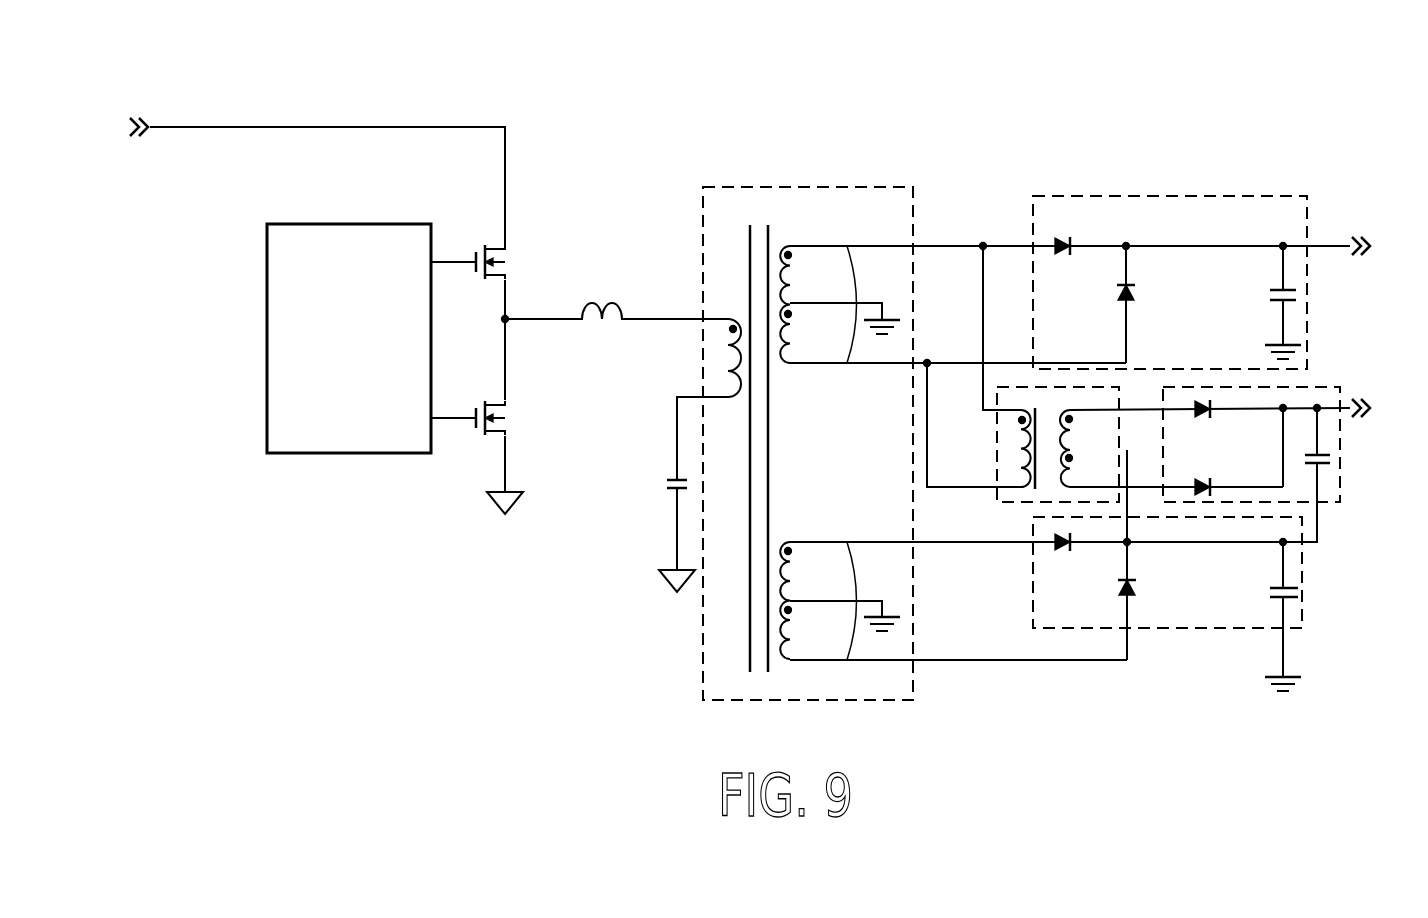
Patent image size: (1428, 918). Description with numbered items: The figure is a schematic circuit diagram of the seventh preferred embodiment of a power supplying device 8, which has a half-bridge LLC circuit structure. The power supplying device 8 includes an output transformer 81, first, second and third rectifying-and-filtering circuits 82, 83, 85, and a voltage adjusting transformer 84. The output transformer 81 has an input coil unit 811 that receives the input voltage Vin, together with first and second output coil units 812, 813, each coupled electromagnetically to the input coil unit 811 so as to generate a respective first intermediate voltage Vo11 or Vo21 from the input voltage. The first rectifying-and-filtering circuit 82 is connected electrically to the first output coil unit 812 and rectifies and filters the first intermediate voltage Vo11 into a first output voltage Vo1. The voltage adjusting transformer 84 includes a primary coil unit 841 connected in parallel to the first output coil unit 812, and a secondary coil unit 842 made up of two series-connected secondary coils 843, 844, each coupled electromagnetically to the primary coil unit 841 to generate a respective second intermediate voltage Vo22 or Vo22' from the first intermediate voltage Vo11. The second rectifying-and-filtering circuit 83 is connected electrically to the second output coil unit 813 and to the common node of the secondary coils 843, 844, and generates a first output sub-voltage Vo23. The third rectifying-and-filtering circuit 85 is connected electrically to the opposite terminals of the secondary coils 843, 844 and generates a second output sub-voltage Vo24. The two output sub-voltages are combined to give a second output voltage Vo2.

The power supplying device 8 is at (1214, 124).
The output transformer 81 is at (862, 186).
The input coil unit 811 is at (701, 367).
The first output coil unit 812 is at (801, 277).
The second output coil unit 813 is at (801, 569).
The first rectifying-and-filtering circuit 82 is at (1281, 196).
The second rectifying-and-filtering circuit 83 is at (1303, 585).
The voltage adjusting transformer 84 is at (994, 431).
The primary coil unit 841 is at (1020, 447).
The secondary coil unit 842 is at (1060, 401).
The secondary coil 843 is at (1059, 430).
The secondary coil 844 is at (1063, 484).
The third rectifying-and-filtering circuit 85 is at (1313, 387).